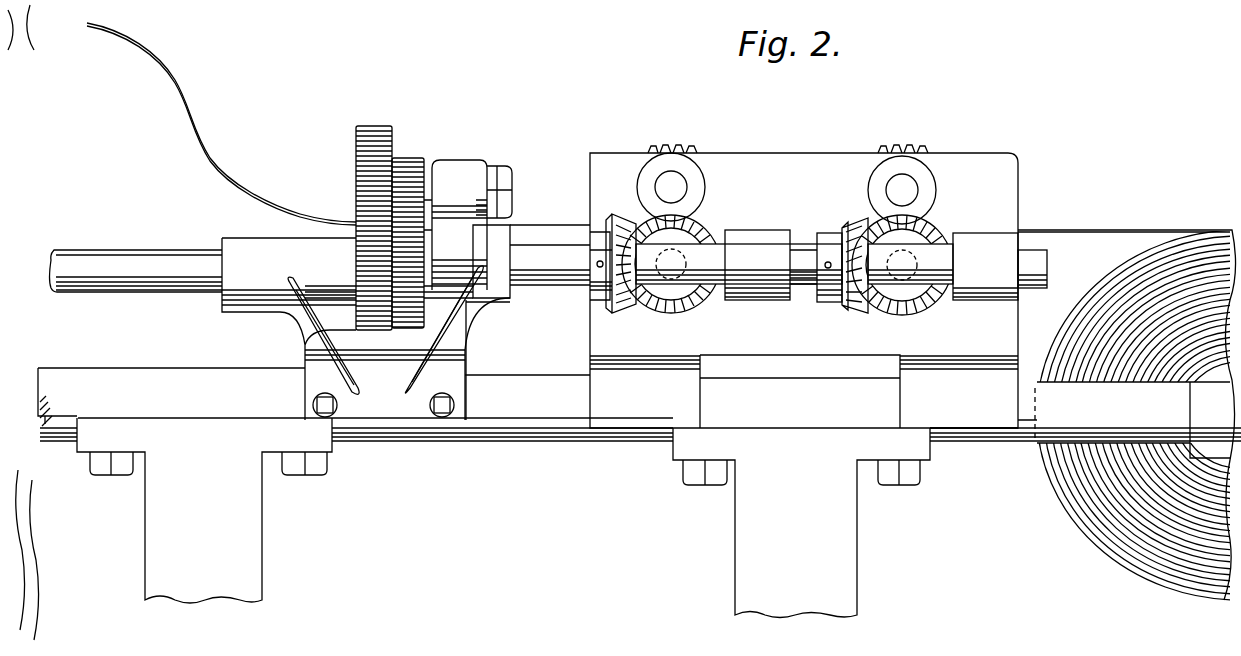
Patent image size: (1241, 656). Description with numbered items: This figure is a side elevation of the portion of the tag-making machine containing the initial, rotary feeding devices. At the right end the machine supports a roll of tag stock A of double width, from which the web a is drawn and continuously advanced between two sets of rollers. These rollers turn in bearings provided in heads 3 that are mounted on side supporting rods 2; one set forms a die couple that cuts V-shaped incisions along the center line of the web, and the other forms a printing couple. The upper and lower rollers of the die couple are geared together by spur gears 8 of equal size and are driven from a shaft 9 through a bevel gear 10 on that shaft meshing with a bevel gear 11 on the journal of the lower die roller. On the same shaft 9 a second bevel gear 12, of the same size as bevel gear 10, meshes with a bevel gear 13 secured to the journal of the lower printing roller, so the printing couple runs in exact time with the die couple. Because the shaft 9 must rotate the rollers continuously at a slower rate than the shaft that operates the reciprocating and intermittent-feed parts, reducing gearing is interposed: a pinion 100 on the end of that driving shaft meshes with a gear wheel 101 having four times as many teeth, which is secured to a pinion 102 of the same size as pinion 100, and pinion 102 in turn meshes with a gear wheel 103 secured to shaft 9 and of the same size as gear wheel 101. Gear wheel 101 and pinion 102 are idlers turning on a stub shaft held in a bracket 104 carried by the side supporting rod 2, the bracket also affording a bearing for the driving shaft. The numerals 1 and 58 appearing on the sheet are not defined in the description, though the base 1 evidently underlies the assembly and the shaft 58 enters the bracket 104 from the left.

The bed 1 is at (639, 404).
The side supporting rod 2 is at (1014, 446).
The head 3 is at (976, 163).
The spur gear 8 is at (688, 152).
The shaft 9 is at (1047, 268).
The bevel gear 10 is at (850, 318).
The bevel gear 11 is at (900, 316).
The bevel gear 12 is at (626, 312).
The bevel gear 13 is at (690, 308).
The shaft 58 is at (182, 256).
The pinion 100 is at (378, 300).
The gear wheel 101 is at (374, 136).
The pinion 102 is at (414, 162).
The gear wheel 103 is at (402, 248).
The bracket 104 is at (496, 245).
The roll of tag stock A is at (1157, 252).
The web a is at (1054, 231).